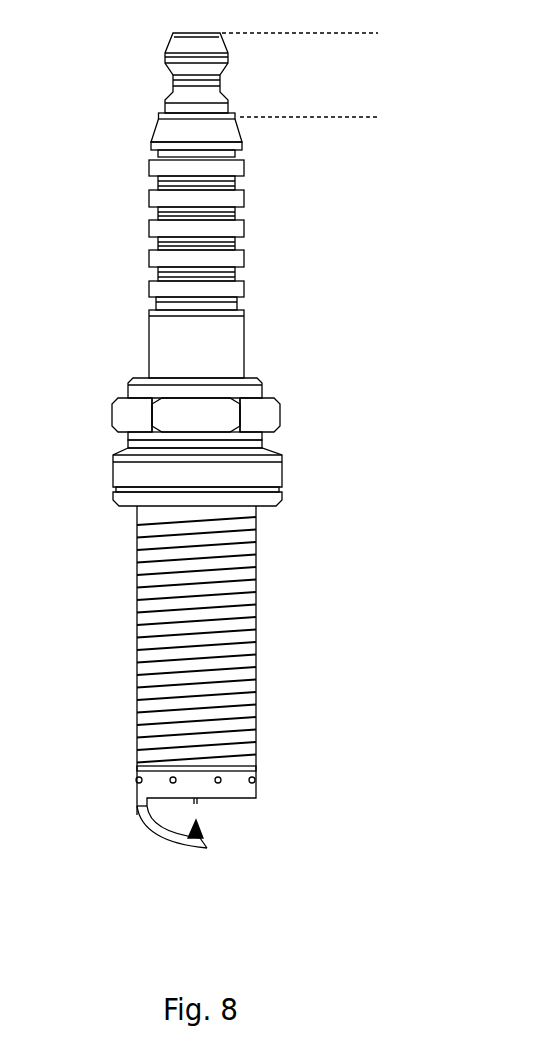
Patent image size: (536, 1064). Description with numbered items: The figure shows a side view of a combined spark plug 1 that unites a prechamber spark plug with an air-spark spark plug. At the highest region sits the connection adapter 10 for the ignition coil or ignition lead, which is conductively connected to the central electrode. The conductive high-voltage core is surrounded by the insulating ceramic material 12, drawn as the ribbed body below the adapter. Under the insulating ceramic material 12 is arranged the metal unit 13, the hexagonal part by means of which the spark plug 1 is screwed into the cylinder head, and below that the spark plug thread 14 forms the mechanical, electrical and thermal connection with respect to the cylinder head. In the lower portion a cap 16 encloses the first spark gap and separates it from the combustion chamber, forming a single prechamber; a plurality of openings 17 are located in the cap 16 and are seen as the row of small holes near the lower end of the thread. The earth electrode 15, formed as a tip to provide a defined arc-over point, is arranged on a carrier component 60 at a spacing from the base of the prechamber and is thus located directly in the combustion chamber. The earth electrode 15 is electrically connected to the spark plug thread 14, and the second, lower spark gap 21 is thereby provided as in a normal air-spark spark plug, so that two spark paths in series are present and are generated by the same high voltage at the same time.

The spark plug 1 is at (249, 477).
The connection adapter 10 is at (278, 97).
The insulating ceramic material 12 is at (290, 282).
The metal unit 13 is at (315, 464).
The spark plug thread 14 is at (250, 672).
The earth electrode 15 is at (208, 836).
The cap 16 is at (274, 785).
The upper row of openings 17 is at (225, 786).
The lower spark gap 21 is at (205, 810).
The carrier component 60 is at (147, 813).